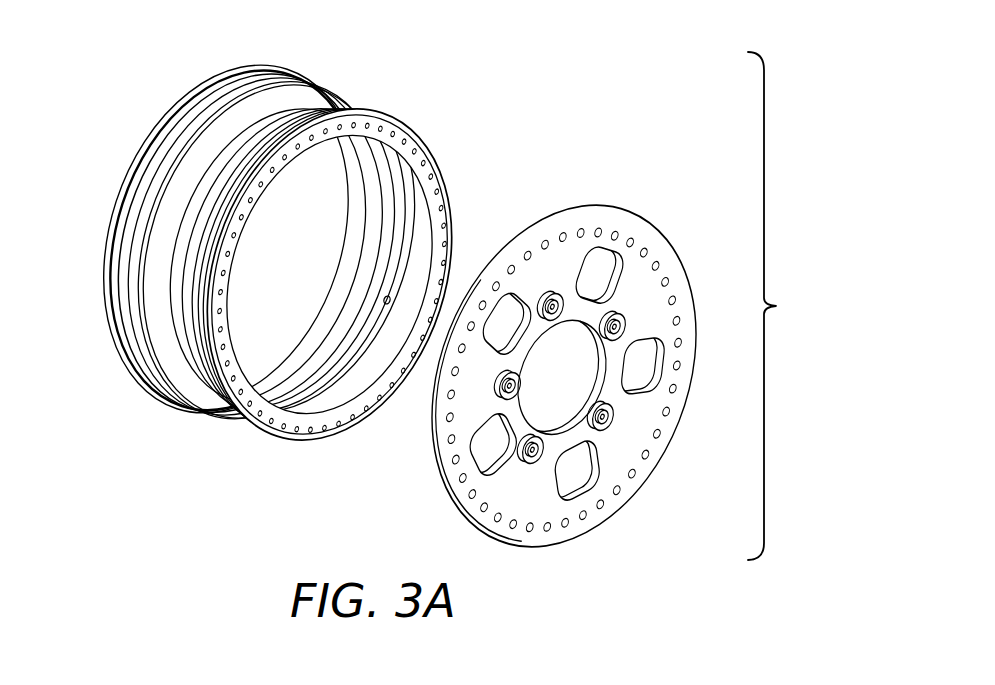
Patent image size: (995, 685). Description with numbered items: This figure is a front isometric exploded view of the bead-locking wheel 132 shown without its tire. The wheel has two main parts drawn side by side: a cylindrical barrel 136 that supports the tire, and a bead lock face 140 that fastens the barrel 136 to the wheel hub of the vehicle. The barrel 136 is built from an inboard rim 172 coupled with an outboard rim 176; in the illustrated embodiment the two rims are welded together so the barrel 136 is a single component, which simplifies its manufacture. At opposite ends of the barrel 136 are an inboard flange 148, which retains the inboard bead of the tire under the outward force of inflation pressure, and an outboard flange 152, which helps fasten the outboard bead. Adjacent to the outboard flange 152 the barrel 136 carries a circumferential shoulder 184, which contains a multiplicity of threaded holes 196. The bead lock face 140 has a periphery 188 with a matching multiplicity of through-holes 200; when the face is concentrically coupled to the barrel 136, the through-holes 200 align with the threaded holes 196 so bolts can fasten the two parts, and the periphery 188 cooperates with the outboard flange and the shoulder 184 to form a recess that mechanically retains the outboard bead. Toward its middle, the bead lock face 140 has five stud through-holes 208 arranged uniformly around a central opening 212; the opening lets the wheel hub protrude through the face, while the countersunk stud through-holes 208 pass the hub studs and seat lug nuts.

The bead-locking wheel 132 is at (786, 306).
The barrel 136 is at (362, 80).
The bead lock face 140 is at (683, 446).
The inboard flange 148 is at (144, 157).
The outboard flange 152 is at (263, 430).
The inboard rim 172 is at (137, 364).
The outboard rim 176 is at (190, 378).
The shoulder 184 is at (257, 178).
The periphery 188 is at (457, 500).
The threaded holes 196 is at (384, 131).
The through-holes 200 is at (631, 231).
The stud through-holes 208 is at (626, 324).
The central opening 212 is at (603, 378).